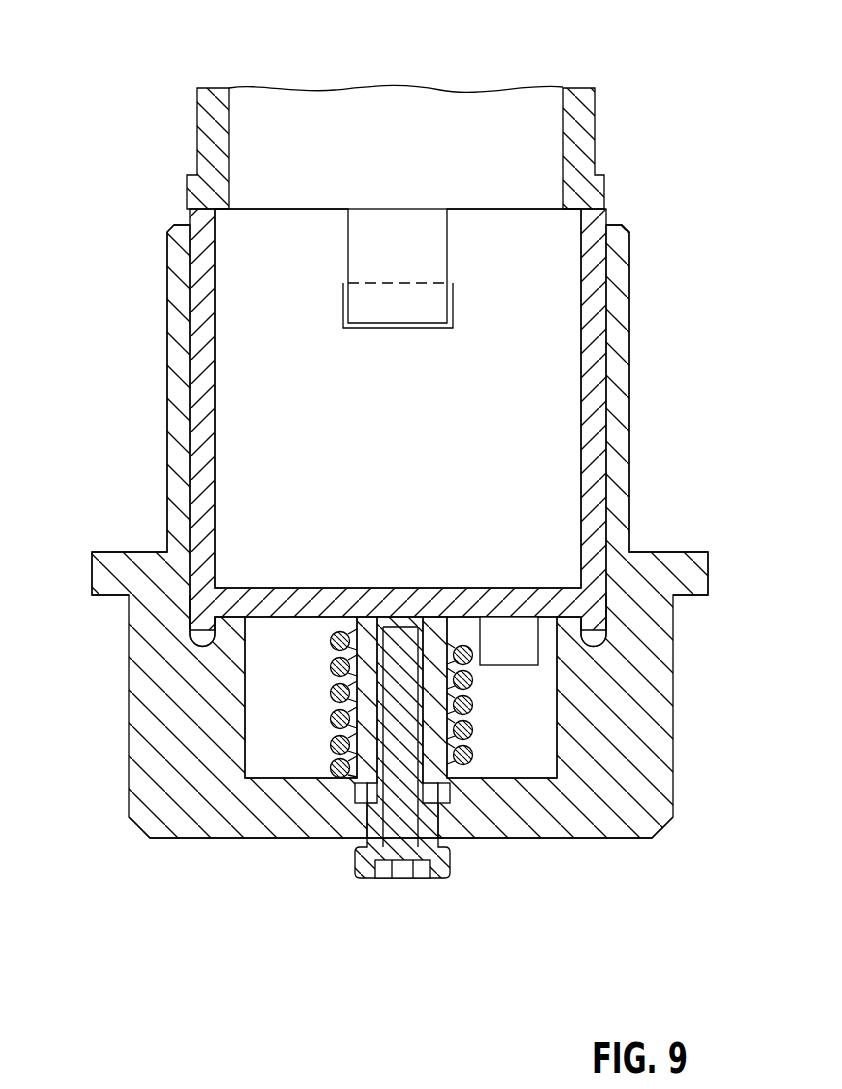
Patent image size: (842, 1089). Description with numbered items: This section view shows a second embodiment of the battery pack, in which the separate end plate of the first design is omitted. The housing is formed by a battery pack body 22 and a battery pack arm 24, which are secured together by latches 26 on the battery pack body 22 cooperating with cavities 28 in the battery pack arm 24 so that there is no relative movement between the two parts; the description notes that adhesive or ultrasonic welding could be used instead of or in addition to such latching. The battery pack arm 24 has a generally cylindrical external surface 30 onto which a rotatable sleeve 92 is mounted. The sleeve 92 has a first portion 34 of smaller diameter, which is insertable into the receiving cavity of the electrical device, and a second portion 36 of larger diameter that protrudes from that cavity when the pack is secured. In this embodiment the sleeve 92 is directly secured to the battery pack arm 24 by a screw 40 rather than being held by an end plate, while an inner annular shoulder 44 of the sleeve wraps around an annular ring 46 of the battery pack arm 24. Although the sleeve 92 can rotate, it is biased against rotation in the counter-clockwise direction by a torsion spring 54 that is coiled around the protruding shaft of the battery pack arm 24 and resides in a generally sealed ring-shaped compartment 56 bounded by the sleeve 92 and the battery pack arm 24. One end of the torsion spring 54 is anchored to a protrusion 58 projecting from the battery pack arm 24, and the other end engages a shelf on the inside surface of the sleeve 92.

The battery pack body 22 is at (473, 124).
The battery pack arm 24 is at (530, 473).
The latches 26 is at (420, 257).
The cavities 28 is at (367, 331).
The cylindrical external surface 30 is at (624, 359).
The first portion 34 is at (182, 453).
The second portion 36 is at (635, 690).
The screw 40 is at (437, 866).
The inner annular shoulder 44 is at (570, 627).
The annular ring 46 is at (205, 641).
The torsion spring 54 is at (337, 746).
The ring-shaped compartment 56 is at (265, 722).
The protrusion 58 is at (508, 650).
The sleeve 92 is at (295, 808).